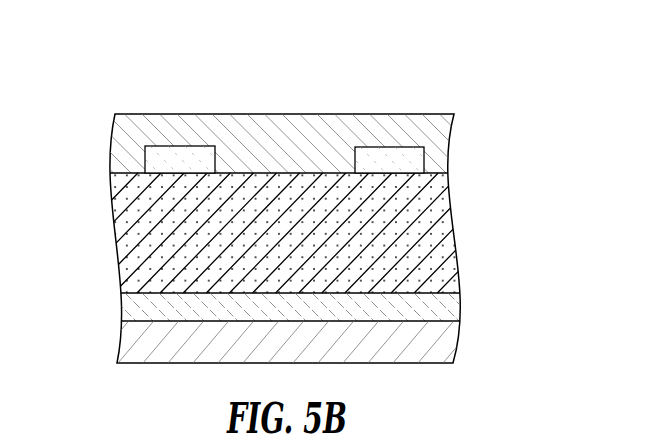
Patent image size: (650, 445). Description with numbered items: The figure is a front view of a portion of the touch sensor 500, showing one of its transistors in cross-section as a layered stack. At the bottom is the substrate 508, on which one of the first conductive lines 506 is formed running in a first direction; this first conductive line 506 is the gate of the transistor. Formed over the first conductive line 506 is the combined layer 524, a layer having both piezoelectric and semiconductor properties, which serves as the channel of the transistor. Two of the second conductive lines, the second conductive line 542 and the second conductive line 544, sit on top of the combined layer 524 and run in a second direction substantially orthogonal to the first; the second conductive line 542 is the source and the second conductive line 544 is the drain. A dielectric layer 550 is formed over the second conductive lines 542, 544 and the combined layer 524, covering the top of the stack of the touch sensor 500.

The touch sensor 500 is at (137, 81).
The dielectric layer 550 is at (402, 123).
The second conductive line 542 is at (160, 164).
The second conductive line 544 is at (412, 161).
The combined layer 524 is at (446, 238).
The first conductive line 506 is at (133, 309).
The substrate 508 is at (447, 346).